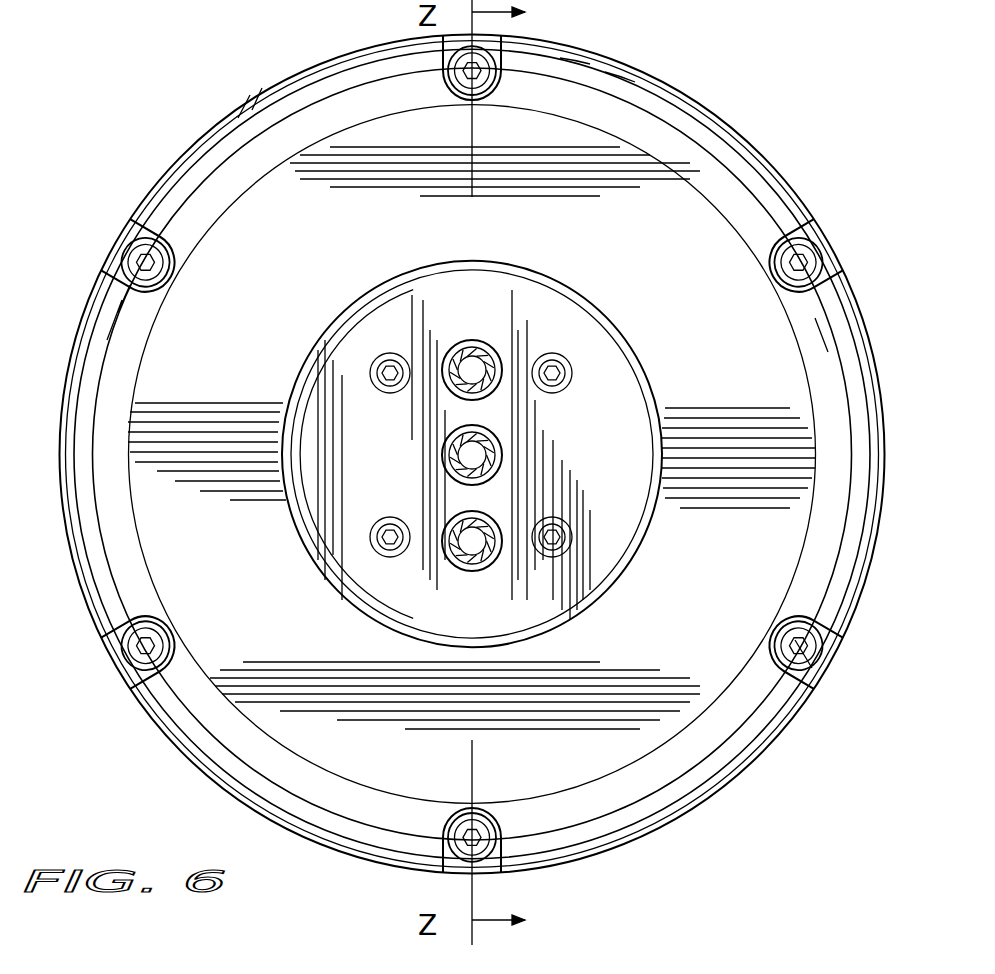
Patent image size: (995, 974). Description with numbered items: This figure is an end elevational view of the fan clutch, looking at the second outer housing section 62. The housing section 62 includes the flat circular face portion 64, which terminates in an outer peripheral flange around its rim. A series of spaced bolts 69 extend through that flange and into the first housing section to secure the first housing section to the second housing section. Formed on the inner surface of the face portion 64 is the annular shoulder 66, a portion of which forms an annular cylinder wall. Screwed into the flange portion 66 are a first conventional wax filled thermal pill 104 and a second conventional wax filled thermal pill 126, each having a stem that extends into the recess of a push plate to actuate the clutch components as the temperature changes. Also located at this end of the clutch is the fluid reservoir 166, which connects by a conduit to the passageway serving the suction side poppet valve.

The second outer housing section 62 is at (703, 157).
The flat circular face portion 64 is at (545, 137).
The annular shoulder 66 is at (595, 430).
The bolts 69 is at (800, 262).
The first thermal pill 104 is at (482, 343).
The fluid reservoir 166 is at (442, 452).
The second thermal pill 126 is at (488, 563).